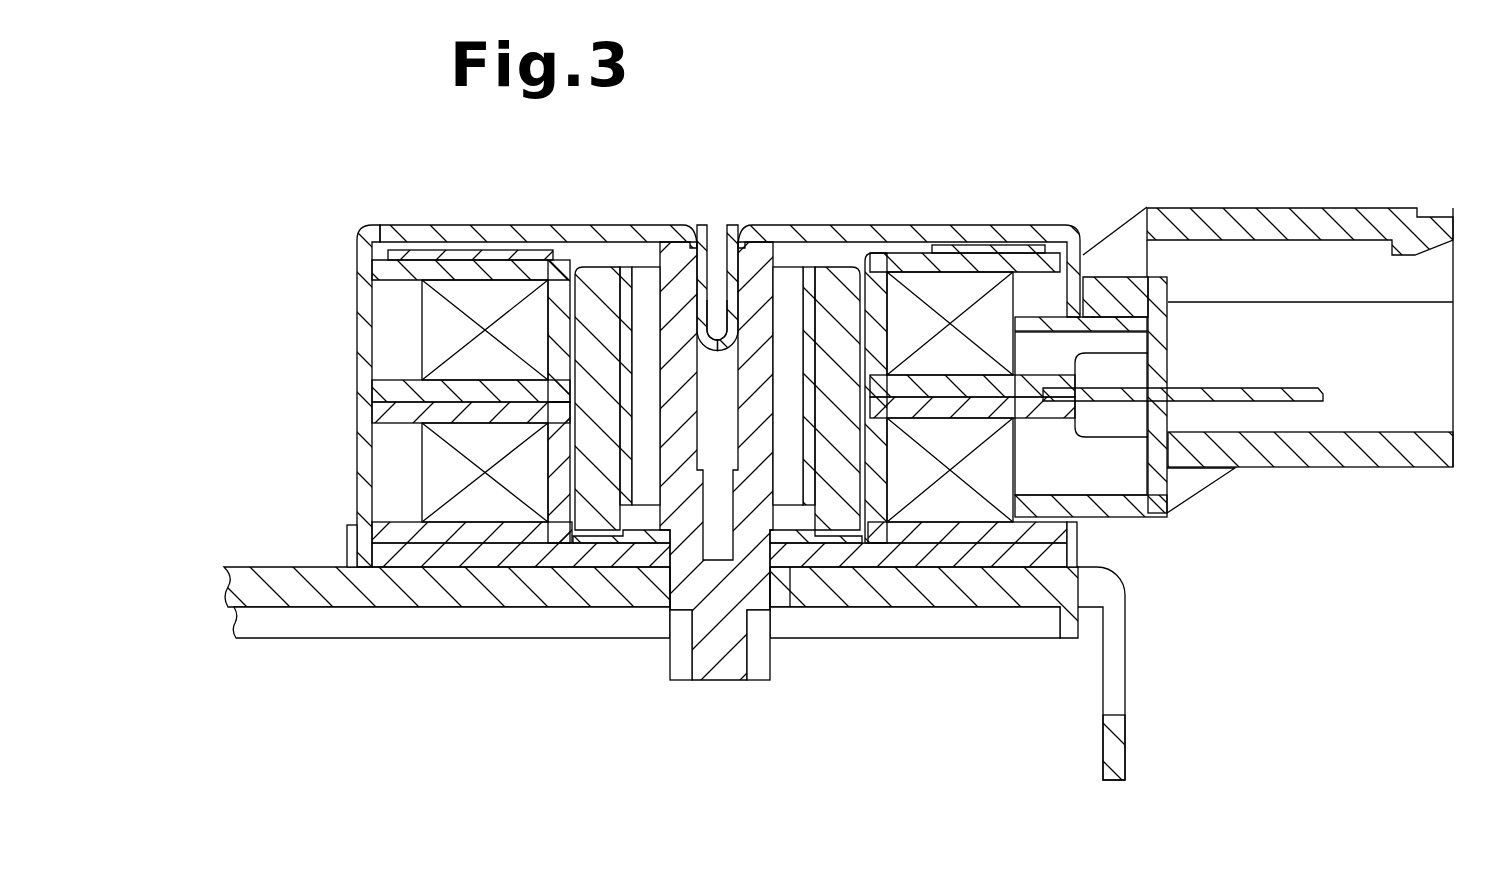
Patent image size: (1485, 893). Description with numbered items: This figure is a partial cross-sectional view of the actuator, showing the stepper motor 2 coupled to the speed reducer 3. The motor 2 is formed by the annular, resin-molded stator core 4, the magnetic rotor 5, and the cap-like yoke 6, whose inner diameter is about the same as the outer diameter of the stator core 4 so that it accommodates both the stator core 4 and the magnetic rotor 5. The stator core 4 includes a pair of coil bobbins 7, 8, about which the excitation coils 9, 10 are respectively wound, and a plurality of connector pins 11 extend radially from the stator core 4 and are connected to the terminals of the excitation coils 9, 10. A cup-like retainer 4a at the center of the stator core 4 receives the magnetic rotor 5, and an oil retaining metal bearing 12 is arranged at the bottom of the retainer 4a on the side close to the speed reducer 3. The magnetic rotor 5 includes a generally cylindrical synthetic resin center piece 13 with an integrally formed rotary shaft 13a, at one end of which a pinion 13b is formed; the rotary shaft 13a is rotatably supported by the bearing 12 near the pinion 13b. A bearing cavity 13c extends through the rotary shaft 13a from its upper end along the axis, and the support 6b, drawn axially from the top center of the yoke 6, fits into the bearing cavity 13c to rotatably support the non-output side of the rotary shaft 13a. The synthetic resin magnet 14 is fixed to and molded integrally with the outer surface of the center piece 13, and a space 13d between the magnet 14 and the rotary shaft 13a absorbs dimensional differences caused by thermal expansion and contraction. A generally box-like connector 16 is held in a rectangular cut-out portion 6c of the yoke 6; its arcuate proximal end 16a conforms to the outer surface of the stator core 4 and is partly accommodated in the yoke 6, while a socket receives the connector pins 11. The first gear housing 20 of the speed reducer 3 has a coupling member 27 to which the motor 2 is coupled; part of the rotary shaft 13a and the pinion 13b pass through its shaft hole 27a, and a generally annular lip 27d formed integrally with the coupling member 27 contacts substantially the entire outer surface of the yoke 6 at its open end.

The motor 2 is at (357, 195).
The speed reducer 3 is at (218, 562).
The stator core 4 is at (470, 235).
The retainer 4a is at (570, 248).
The magnetic rotor 5 is at (837, 264).
The yoke 6 is at (978, 232).
The support 6b is at (718, 343).
The cut-out portion 6c is at (1085, 320).
The coil bobbin 7 is at (362, 263).
The coil bobbin 8 is at (362, 407).
The excitation coil 9 is at (432, 320).
The excitation coil 10 is at (432, 468).
The connector pins 11 is at (1267, 386).
The oil retaining metal bearing 12 is at (812, 578).
The center piece 13 is at (634, 522).
The rotary shaft 13a is at (748, 250).
The pinion 13b is at (677, 662).
The bearing cavity 13c is at (698, 240).
The space 13d is at (790, 290).
The magnet 14 is at (592, 528).
The connector 16 is at (1213, 210).
The proximal end 16a is at (1088, 504).
The first gear housing 20 is at (243, 578).
The coupling member 27 is at (1095, 566).
The shaft hole 27a is at (775, 578).
The lip 27d is at (347, 542).